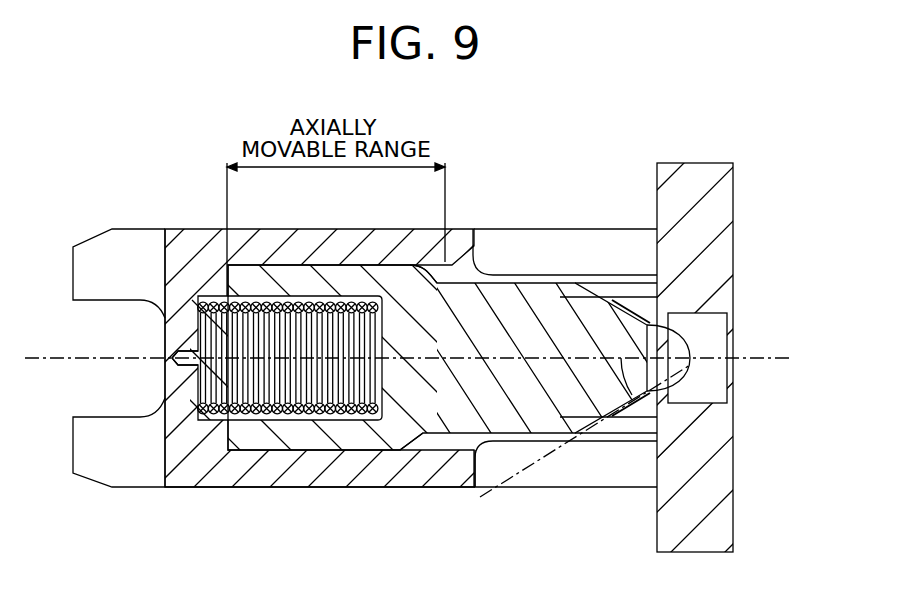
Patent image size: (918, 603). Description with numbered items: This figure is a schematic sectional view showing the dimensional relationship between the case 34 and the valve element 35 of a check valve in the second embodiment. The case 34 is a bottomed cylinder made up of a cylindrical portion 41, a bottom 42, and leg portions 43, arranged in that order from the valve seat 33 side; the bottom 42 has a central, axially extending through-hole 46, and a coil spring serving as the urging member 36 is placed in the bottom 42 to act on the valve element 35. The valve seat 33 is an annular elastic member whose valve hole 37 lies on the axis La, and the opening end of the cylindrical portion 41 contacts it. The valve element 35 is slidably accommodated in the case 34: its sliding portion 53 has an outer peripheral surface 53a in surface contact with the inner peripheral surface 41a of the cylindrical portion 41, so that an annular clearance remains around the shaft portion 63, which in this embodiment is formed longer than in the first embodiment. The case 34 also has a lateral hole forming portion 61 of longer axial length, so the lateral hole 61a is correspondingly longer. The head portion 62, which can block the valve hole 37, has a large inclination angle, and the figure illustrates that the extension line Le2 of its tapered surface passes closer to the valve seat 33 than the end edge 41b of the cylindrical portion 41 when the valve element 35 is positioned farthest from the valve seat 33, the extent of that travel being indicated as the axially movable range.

The valve seat 33 is at (733, 208).
The case 34 is at (170, 229).
The valve element 35 is at (326, 265).
The urging member 36 is at (300, 305).
The valve hole 37 is at (733, 320).
The cylindrical portion 41 is at (365, 488).
The inner peripheral surface 41a is at (417, 452).
The end edge 41b is at (485, 468).
The bottom 42 is at (205, 488).
The leg portions 43 is at (105, 240).
The through-hole 46 is at (175, 362).
The sliding portion 53 is at (430, 262).
The outer peripheral surface 53a is at (397, 448).
The lateral hole forming portion 61 is at (522, 228).
The lateral hole 61a is at (690, 382).
The head portion 62 is at (637, 290).
The shaft portion 63 is at (610, 283).
The axis La is at (790, 358).
The extension line Le2 is at (490, 500).